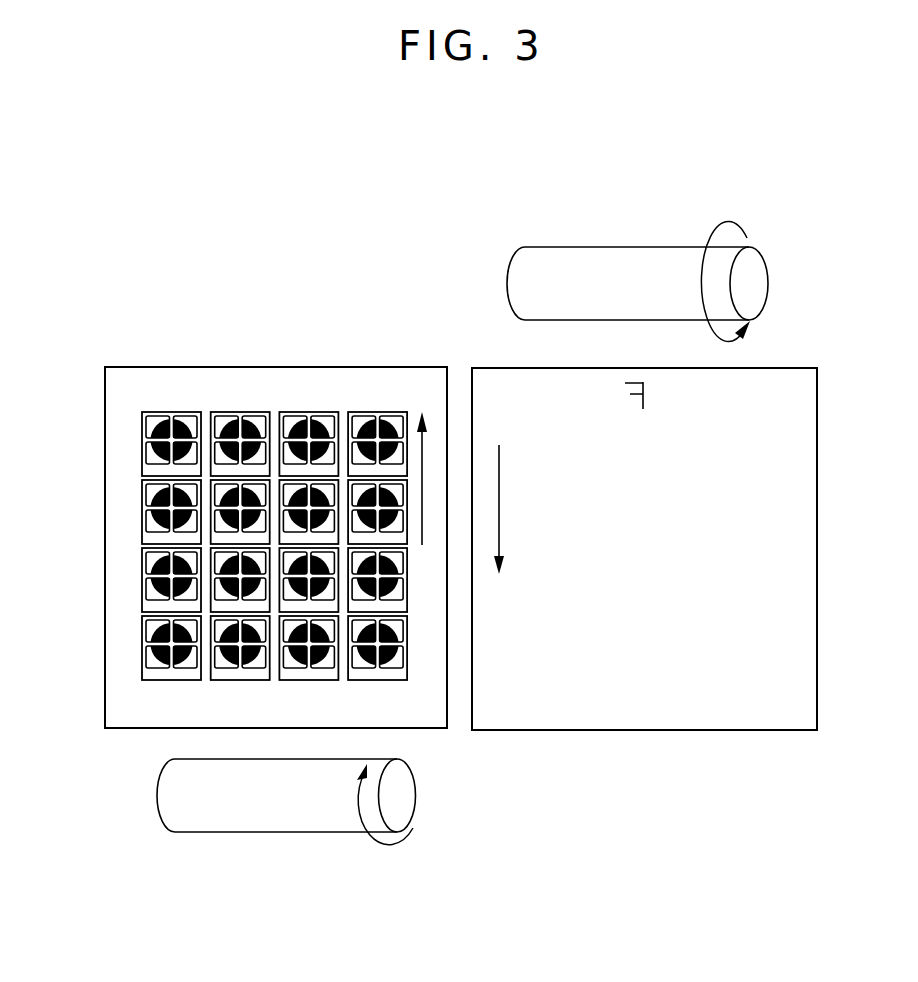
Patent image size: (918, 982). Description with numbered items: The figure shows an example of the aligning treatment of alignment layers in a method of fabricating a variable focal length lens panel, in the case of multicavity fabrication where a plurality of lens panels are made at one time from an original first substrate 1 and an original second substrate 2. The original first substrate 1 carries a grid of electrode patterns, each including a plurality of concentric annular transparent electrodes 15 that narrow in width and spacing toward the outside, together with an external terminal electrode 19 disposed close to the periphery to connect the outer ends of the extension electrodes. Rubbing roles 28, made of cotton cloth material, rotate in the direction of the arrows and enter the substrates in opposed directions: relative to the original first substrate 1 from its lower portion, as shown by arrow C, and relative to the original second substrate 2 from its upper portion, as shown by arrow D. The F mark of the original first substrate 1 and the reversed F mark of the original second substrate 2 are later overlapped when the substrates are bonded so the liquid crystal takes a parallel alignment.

The original first substrate 1 is at (239, 503).
The original second substrate 2 is at (655, 728).
The annular transparent electrodes 15 is at (152, 425).
The external terminal electrode 19 is at (152, 470).
The rubbing roles 28 is at (622, 263).